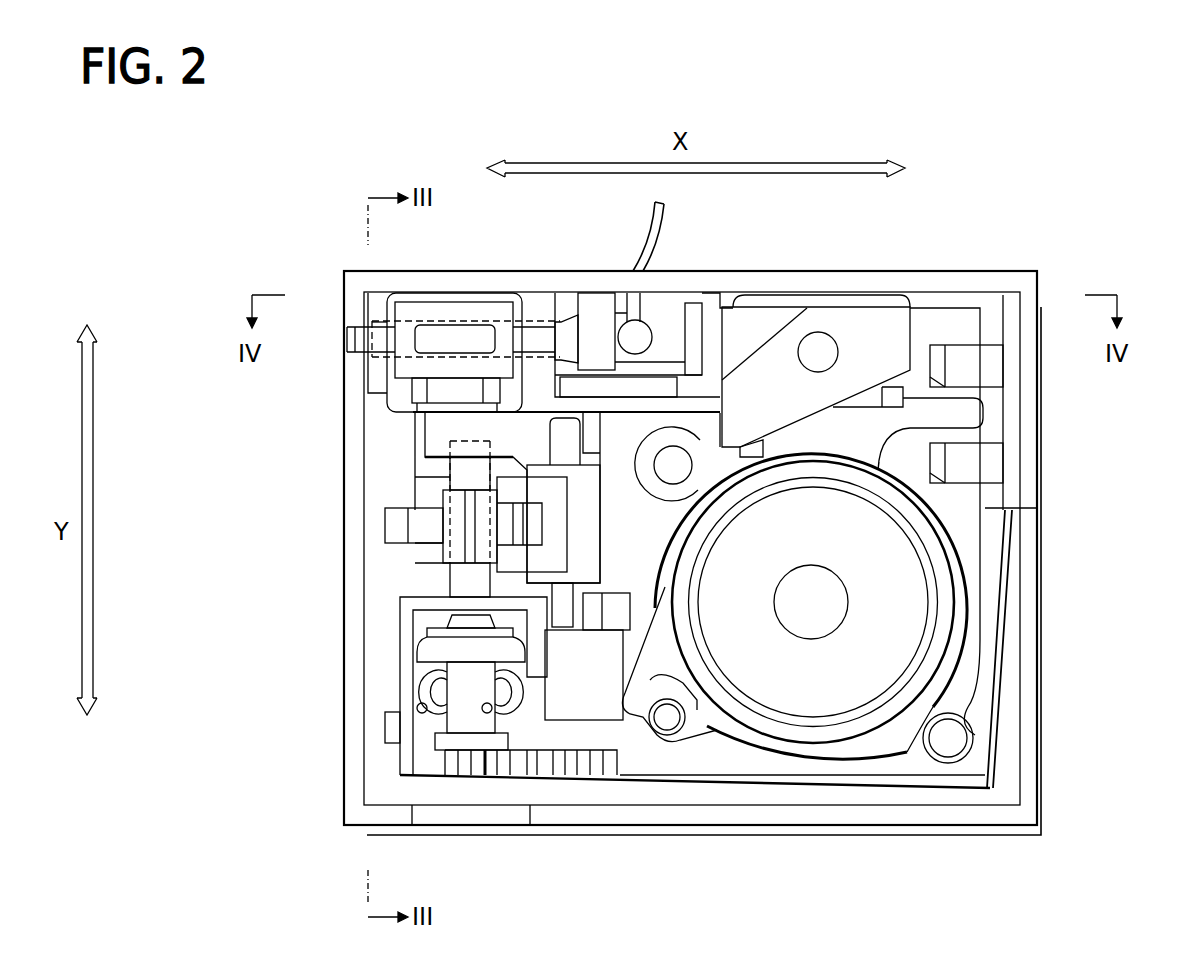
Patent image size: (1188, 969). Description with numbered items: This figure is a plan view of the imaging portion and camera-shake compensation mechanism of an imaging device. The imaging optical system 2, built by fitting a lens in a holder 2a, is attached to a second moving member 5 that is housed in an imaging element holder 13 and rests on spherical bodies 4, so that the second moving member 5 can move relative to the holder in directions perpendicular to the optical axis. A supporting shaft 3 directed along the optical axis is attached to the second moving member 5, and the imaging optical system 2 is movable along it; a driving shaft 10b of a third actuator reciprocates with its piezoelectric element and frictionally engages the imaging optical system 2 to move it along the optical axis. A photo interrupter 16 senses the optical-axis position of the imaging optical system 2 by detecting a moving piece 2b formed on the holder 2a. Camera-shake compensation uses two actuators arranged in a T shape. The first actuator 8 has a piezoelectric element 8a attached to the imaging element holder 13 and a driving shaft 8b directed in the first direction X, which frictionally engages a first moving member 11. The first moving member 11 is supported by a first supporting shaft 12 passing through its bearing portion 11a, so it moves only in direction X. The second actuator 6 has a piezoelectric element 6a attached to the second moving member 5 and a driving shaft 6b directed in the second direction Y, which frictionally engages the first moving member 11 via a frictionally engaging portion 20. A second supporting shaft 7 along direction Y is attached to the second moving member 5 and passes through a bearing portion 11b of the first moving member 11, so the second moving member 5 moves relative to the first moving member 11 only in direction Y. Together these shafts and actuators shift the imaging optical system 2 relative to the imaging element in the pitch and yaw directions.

The imaging optical system 2 is at (905, 632).
The holder 2a is at (780, 727).
The moving piece 2b is at (973, 420).
The supporting shaft 3 is at (667, 735).
The spherical bodies 4 is at (678, 460).
The second moving member 5 is at (965, 510).
The second actuator 6 is at (437, 700).
The piezoelectric element 6a is at (468, 703).
The driving shaft 6b is at (472, 582).
The second supporting shaft 7 is at (563, 597).
The first actuator 8 is at (628, 330).
The piezoelectric element 8a is at (663, 330).
The driving shaft 8b is at (478, 330).
The driving shaft 10b is at (822, 355).
The first moving member 11 is at (413, 460).
The bearing portion 11a is at (425, 310).
The bearing portion 11b is at (588, 512).
The first supporting shaft 12 is at (383, 347).
The imaging element holder 13 is at (1030, 800).
The photo interrupter 16 is at (975, 355).
The frictionally engaging portion 20 is at (425, 525).